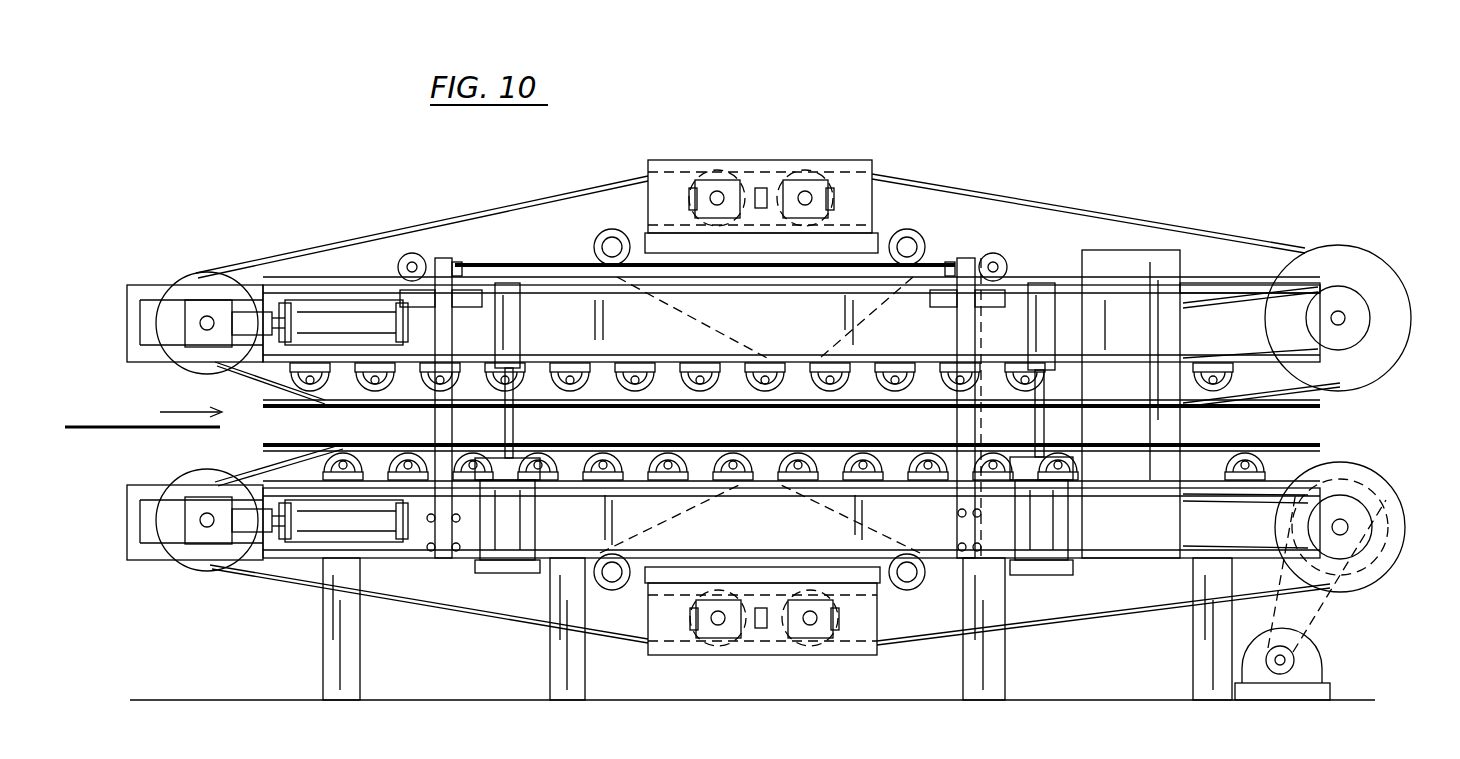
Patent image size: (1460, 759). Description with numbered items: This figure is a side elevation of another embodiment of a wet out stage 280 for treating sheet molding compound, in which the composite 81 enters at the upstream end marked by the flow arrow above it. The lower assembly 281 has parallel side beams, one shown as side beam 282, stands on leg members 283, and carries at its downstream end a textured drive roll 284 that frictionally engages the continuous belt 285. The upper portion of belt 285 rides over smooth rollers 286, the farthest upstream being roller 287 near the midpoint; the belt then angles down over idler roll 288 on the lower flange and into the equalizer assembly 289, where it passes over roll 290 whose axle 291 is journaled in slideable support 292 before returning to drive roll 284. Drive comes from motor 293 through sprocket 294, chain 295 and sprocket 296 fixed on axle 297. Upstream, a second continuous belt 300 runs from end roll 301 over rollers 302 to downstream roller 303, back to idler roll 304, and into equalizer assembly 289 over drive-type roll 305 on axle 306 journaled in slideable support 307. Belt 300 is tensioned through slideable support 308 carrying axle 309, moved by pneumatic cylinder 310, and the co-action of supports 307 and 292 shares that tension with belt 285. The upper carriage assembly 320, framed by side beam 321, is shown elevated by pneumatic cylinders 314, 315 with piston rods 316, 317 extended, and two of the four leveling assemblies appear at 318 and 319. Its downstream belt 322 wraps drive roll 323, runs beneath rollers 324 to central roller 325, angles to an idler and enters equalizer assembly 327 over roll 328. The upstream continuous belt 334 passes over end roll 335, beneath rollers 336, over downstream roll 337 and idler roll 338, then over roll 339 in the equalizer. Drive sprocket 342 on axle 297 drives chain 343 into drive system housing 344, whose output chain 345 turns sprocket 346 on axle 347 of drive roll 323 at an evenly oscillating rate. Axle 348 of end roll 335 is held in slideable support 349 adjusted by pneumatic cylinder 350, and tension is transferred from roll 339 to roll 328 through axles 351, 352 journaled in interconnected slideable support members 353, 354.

The wet out stage 280 is at (1031, 99).
The lower assembly 281 is at (1322, 740).
The composite 81 is at (143, 410).
The side beam 282 is at (1200, 540).
The leg members 283 is at (360, 655).
The drive roll 284 is at (1384, 486).
The continuous belt 285 is at (1084, 628).
The rollers 286 is at (861, 450).
The roller 287 is at (798, 450).
The idler roll 288 is at (925, 590).
The equalizer assembly 289 is at (877, 650).
The roll 290 is at (795, 650).
The axle 291 is at (809, 626).
The slideable support 292 is at (823, 646).
The motor 293 is at (1330, 690).
The sprocket 294 is at (1296, 660).
The chain 295 is at (1340, 620).
The sprocket 296 is at (1390, 526).
The axle 297 is at (1348, 530).
The continuous belt 300 is at (462, 624).
The end roll 301 is at (216, 562).
The rollers 302 is at (343, 448).
The downstream roller 303 is at (734, 449).
The idler roll 304 is at (612, 590).
The drive-type roll 305 is at (726, 648).
The axle 306 is at (718, 626).
The slideable support 307 is at (708, 646).
The slideable support 308 is at (205, 532).
The axle 309 is at (205, 515).
The pneumatic cylinder 310 is at (380, 545).
The pneumatic cylinder 314 is at (1036, 576).
The pneumatic cylinder 315 is at (512, 575).
The piston rod 316 is at (1036, 418).
The piston rod 317 is at (512, 427).
The leveling assembly 318 is at (996, 250).
The leveling assembly 319 is at (458, 251).
The upper carriage assembly 320 is at (1372, 176).
The side beam 321 is at (1200, 290).
The downstream belt 322 is at (1040, 200).
The drive roll 323 is at (1372, 268).
The rollers 324 is at (896, 400).
The roller 325 is at (829, 400).
The equalizer assembly 327 is at (758, 160).
The roll 328 is at (836, 210).
The upstream continuous belt 334 is at (423, 226).
The end roll 335 is at (206, 272).
The rollers 336 is at (316, 400).
The downstream roll 337 is at (765, 400).
The idler roll 338 is at (612, 232).
The roll 339 is at (723, 172).
The drive sprocket 342 is at (1346, 494).
The chain 343 is at (1248, 504).
The drive system housing 344 is at (1152, 250).
The chain 345 is at (1272, 312).
The sprocket 346 is at (1370, 356).
The axle 347 is at (1345, 316).
The axle 348 is at (205, 318).
The slideable support 349 is at (205, 336).
The pneumatic cylinder 350 is at (328, 300).
The axle 351 is at (716, 194).
The axle 352 is at (808, 194).
The slideable support member 353 is at (690, 196).
The slideable support member 354 is at (812, 178).